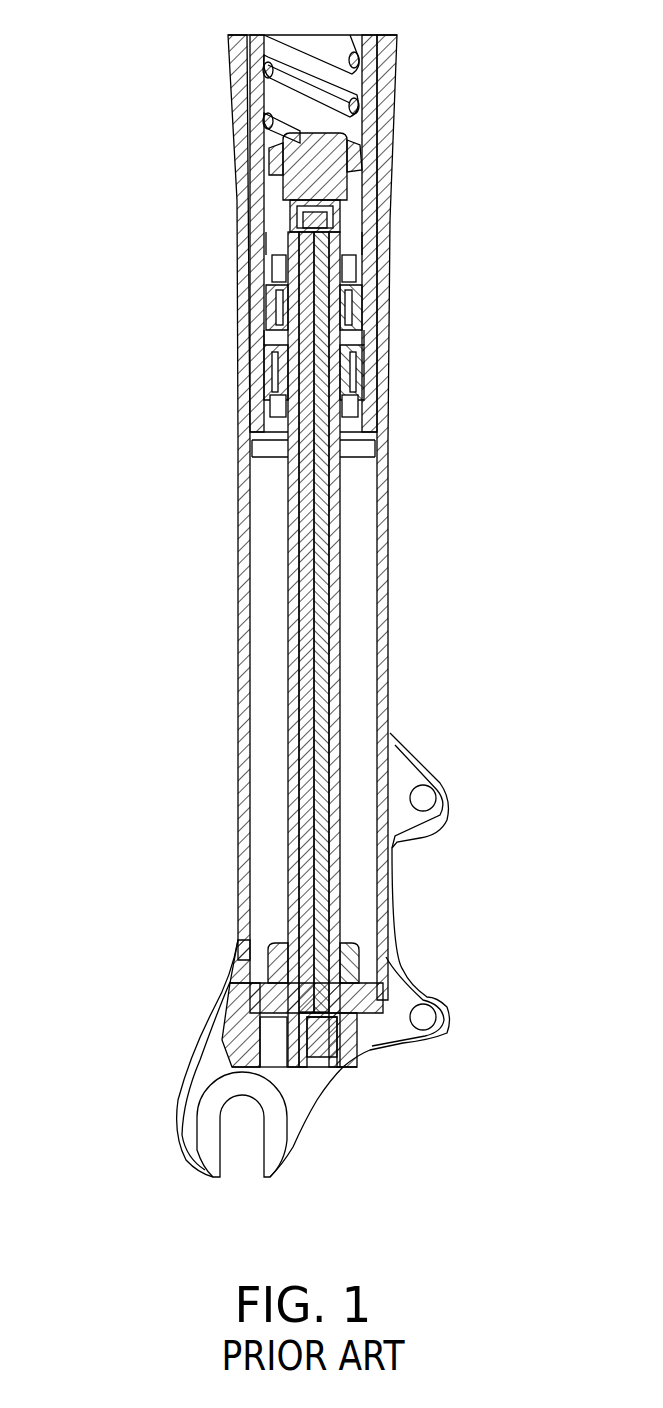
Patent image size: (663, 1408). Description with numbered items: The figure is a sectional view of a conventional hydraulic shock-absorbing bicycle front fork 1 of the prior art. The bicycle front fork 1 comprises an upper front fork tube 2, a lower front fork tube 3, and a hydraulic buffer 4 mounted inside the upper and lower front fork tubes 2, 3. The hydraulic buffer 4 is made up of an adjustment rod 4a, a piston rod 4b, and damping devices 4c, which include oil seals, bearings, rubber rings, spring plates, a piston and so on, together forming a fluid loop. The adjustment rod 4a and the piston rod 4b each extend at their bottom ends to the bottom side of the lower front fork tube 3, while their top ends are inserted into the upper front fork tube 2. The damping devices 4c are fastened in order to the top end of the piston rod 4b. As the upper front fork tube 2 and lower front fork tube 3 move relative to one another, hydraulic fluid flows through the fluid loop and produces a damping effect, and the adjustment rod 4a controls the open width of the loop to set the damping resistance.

The bicycle front fork 1 is at (110, 152).
The upper front fork tube 2 is at (248, 162).
The lower front fork tube 3 is at (240, 566).
The hydraulic buffer 4 is at (505, 313).
The adjustment rod 4a is at (325, 580).
The piston rod 4b is at (383, 496).
The damping devices 4c is at (380, 340).